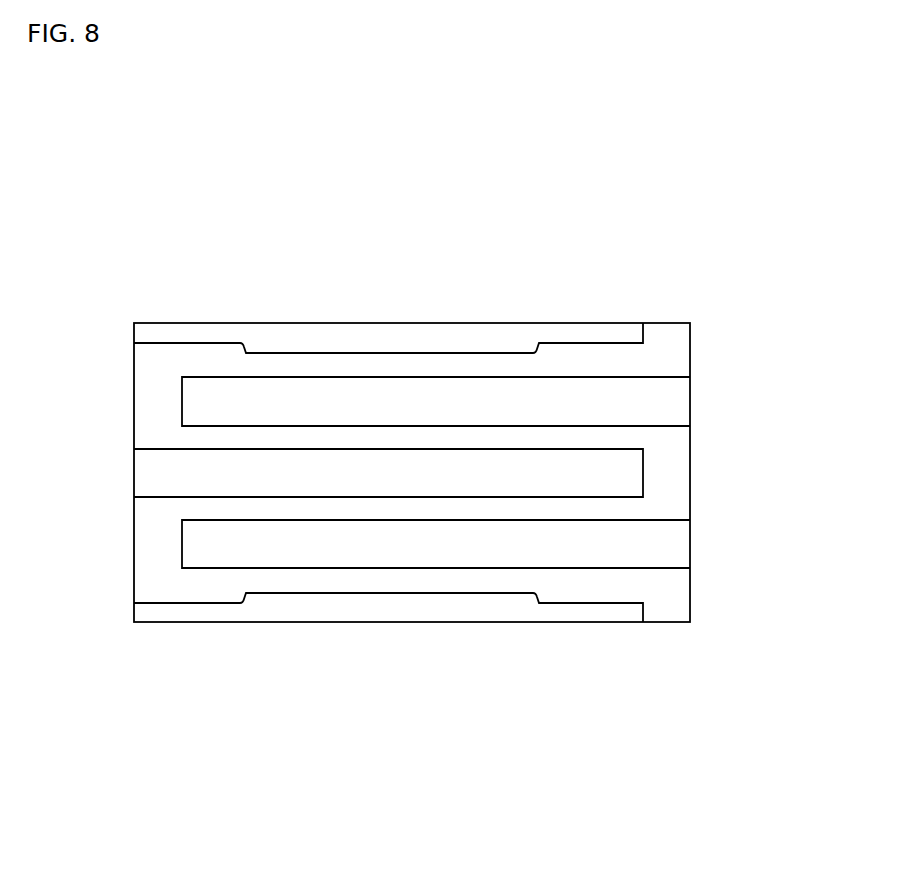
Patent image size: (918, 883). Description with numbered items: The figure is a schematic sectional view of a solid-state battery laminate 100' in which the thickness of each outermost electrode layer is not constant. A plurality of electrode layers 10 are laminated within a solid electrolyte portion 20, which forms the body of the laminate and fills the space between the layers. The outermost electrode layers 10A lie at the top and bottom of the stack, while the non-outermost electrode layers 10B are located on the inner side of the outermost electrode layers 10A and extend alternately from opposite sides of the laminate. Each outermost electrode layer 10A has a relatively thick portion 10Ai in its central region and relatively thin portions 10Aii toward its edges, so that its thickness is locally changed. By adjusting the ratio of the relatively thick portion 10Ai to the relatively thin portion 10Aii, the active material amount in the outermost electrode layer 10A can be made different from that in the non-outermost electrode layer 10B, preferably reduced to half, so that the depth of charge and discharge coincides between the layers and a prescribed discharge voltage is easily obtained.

The solid-state battery laminate 100' is at (501, 451).
The electrode layer 10 is at (501, 481).
The outermost electrode layer 10A is at (633, 329).
The non-outermost electrode layer 10B is at (677, 401).
The relatively thick portion of outermost electrode layer 10Ai is at (533, 298).
The relatively thin portion of outermost electrode layer 10Aii is at (240, 298).
The solid electrolyte portion 20 is at (418, 758).